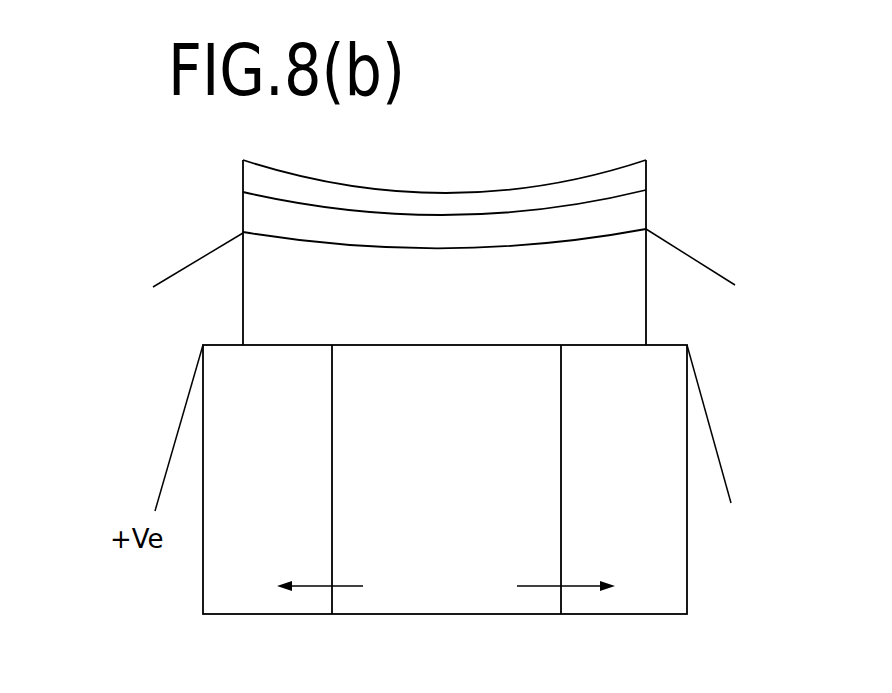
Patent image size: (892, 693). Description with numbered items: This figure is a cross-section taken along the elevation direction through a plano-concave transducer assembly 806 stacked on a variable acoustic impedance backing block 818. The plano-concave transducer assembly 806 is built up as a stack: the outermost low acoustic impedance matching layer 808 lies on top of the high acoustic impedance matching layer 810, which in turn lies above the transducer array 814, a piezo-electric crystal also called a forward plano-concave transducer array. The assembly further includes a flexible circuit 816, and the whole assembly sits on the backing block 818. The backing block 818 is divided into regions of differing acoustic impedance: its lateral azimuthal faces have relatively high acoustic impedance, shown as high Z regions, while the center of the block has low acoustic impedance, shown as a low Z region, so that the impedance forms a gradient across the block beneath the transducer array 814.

The plano-concave transducer assembly 806 is at (143, 343).
The low acoustic impedance matching layer 808 is at (618, 183).
The high acoustic impedance matching layer 810 is at (626, 217).
The transducer array 814 is at (625, 297).
The flexible circuit 816 is at (720, 458).
The variable acoustic impedance backing block 818 is at (643, 563).